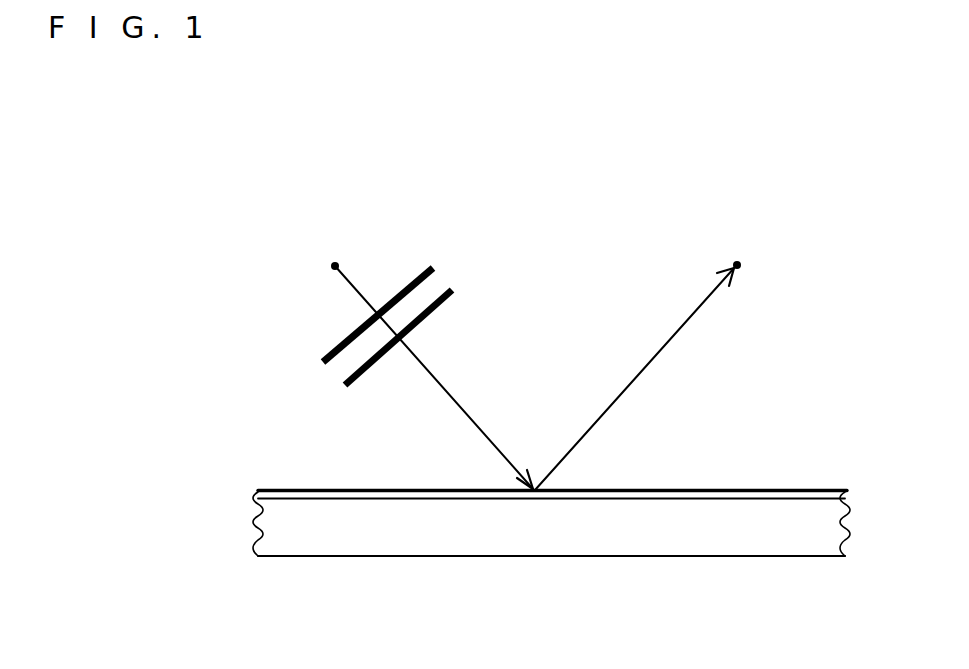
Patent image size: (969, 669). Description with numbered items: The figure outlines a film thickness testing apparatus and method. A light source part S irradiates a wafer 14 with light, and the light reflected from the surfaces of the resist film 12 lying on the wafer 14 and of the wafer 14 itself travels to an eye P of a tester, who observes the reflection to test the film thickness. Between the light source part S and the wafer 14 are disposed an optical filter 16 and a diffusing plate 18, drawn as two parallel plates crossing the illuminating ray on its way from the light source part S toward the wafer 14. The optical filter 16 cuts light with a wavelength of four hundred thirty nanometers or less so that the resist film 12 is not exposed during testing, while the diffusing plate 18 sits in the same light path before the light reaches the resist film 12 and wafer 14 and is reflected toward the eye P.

The resist film 12 is at (817, 495).
The wafer 14 is at (832, 528).
The optical filter 16 is at (433, 267).
The diffusing plate 18 is at (452, 290).
The light source part S is at (324, 254).
The eye of a tester P is at (746, 252).